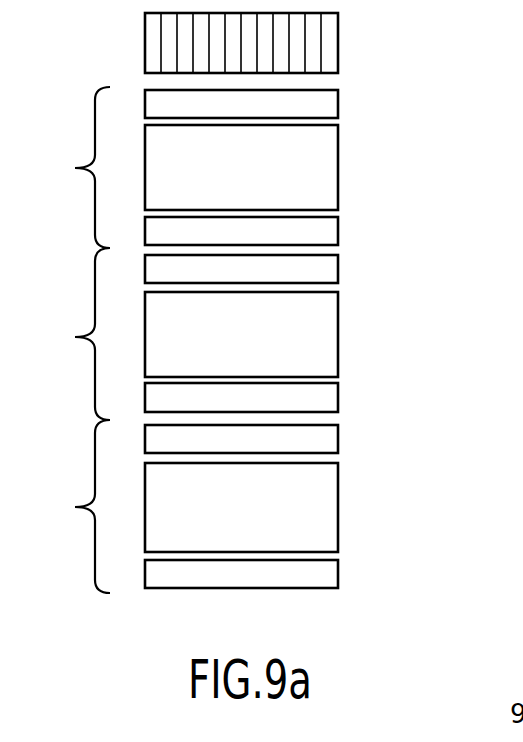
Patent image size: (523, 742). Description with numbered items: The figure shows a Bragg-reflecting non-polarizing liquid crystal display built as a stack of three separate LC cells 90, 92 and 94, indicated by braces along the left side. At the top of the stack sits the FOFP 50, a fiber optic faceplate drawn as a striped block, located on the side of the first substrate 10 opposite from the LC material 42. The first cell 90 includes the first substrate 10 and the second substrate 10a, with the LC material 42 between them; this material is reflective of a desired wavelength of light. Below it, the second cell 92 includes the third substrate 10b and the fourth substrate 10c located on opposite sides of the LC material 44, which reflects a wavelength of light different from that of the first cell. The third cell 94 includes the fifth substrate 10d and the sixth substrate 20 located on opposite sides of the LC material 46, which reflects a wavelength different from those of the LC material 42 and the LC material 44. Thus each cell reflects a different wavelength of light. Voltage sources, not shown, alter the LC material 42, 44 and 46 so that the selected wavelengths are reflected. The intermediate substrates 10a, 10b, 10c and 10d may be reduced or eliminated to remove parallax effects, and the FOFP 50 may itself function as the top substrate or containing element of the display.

The FOFP 50 is at (338, 43).
The first substrate 10 is at (338, 107).
The LC material 42 is at (338, 170).
The second substrate 10a is at (338, 233).
The third substrate 10b is at (338, 275).
The LC material 44 is at (338, 345).
The fourth substrate 10c is at (338, 400).
The fifth substrate 10d is at (338, 442).
The LC material 46 is at (338, 512).
The sixth substrate 20 is at (338, 577).
The first LC cell 90 is at (75, 167).
The second LC cell 92 is at (75, 334).
The third LC cell 94 is at (75, 506).